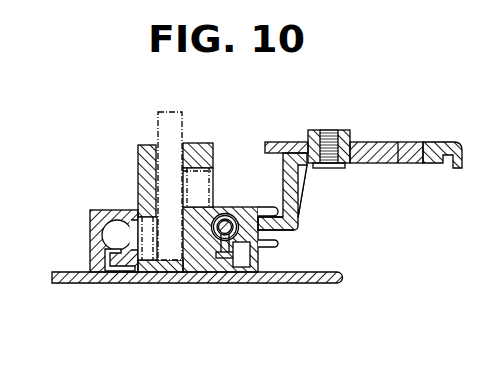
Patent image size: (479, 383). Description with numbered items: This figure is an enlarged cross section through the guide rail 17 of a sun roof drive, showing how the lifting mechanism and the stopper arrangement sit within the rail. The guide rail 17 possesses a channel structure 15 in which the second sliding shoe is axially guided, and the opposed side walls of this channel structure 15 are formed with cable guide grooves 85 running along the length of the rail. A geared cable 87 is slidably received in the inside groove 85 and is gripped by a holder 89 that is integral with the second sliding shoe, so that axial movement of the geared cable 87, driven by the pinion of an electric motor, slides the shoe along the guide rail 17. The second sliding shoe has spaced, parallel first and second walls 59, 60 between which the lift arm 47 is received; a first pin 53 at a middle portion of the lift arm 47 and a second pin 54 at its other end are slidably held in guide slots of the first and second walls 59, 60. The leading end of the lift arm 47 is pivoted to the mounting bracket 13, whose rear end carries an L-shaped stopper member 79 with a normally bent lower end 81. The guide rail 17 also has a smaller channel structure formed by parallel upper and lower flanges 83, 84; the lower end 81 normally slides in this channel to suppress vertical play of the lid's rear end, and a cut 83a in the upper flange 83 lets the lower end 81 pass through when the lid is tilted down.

The mounting bracket 13 is at (433, 142).
The channel structure 15 is at (237, 247).
The guide rail 17 is at (83, 285).
The lift arm 47 is at (167, 133).
The first pin 53 is at (213, 178).
The second pin 54 is at (140, 246).
The first wall 59 is at (198, 146).
The second wall 60 is at (138, 163).
The stopper member 79 is at (283, 186).
The lower end 81 is at (283, 225).
The upper flange 83 is at (279, 212).
The cut 83a is at (300, 199).
The lower flange 84 is at (272, 244).
The cable guide groove 85 is at (110, 210).
The geared cable 87 is at (223, 241).
The holder 89 is at (211, 244).